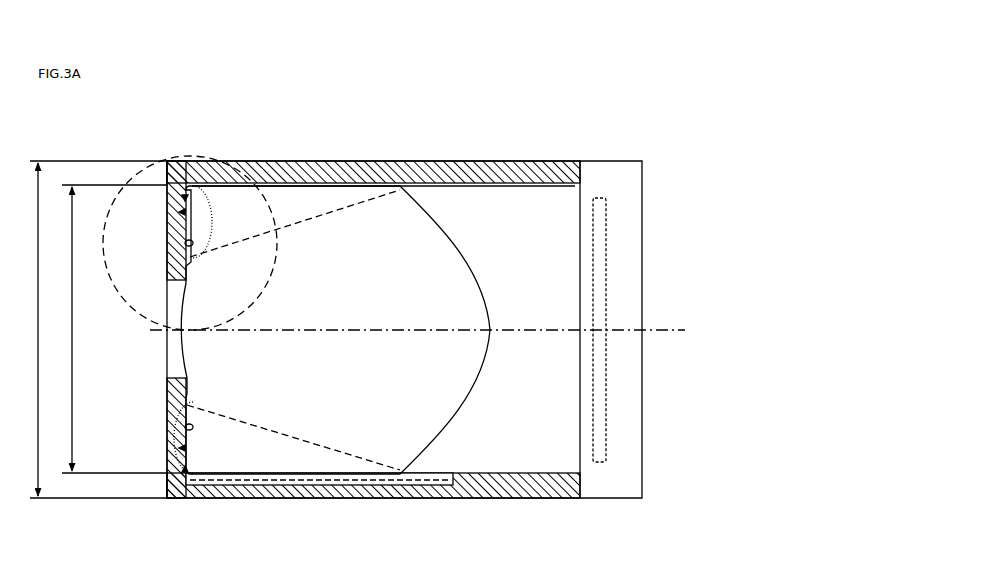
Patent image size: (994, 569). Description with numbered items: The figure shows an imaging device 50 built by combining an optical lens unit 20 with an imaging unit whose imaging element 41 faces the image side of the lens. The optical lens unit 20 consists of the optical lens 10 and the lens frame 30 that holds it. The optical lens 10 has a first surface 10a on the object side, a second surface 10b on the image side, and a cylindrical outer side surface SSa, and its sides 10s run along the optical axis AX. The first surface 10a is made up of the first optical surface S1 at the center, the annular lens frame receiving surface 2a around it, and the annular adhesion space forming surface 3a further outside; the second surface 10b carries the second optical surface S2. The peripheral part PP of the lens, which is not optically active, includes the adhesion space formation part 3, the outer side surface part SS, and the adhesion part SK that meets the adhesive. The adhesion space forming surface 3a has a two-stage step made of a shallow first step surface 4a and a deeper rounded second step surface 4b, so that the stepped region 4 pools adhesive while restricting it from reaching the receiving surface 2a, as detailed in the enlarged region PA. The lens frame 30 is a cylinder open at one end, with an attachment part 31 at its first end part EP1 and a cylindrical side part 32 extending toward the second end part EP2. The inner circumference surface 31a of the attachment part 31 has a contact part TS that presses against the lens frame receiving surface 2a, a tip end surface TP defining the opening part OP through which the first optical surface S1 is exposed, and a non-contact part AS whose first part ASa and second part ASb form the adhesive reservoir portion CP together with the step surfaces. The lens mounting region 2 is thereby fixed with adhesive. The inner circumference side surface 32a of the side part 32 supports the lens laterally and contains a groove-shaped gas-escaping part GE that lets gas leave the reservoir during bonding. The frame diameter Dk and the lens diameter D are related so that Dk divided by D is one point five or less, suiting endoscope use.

The optical lens unit 20 is at (493, 143).
The lens frame 30 is at (435, 182).
The cylindrical side part 32 is at (390, 162).
The inner circumference side surface 32a is at (327, 187).
The optical lens 10 is at (478, 255).
The first surface 10a is at (173, 362).
The second surface 10b is at (495, 370).
The lens side surface 10s is at (472, 295).
The first optical surface S1 is at (178, 340).
The second optical surface S2 is at (473, 405).
The lens holder 2 is at (155, 267).
The lens frame receiving surface 2a is at (182, 280).
The adhesion space formation part 3 is at (174, 210).
The adhesion space forming surface 3a is at (172, 248).
The attachment part 31 is at (173, 223).
The inner circumference surface 31a is at (188, 242).
The sensor substrate 4 is at (635, 290).
The first step surface 4a is at (170, 255).
The second step surface 4b is at (177, 203).
The imaging element 41 is at (601, 462).
The imaging device 50 is at (587, 128).
The non-contact part AS is at (190, 217).
The first part ASa is at (190, 230).
The second part ASb is at (192, 190).
The contact part TS is at (187, 277).
The tip end surface TP is at (175, 303).
The opening part OP is at (175, 330).
The optical axis AX is at (665, 335).
The adhesive reservoir portion CP is at (192, 163).
The peripheral part PP is at (257, 160).
The outer side surface part SS is at (302, 182).
The outer side surface SSa is at (312, 182).
The first end part EP1 is at (172, 162).
The second end part EP2 is at (562, 165).
The adhesion part SK is at (162, 175).
The region PA is at (130, 158).
The gas-escaping part GE is at (430, 479).
The diameter of the lens frame Dk is at (90, 329).
The lens diameter D is at (112, 329).